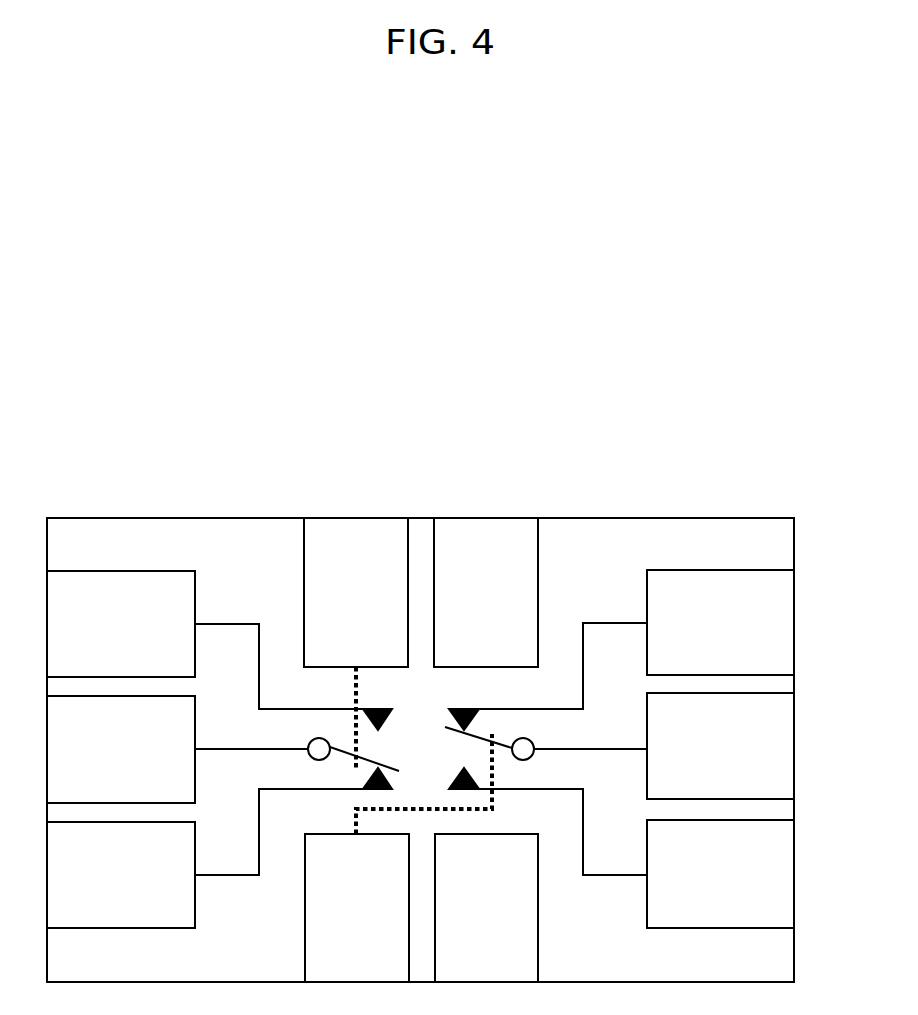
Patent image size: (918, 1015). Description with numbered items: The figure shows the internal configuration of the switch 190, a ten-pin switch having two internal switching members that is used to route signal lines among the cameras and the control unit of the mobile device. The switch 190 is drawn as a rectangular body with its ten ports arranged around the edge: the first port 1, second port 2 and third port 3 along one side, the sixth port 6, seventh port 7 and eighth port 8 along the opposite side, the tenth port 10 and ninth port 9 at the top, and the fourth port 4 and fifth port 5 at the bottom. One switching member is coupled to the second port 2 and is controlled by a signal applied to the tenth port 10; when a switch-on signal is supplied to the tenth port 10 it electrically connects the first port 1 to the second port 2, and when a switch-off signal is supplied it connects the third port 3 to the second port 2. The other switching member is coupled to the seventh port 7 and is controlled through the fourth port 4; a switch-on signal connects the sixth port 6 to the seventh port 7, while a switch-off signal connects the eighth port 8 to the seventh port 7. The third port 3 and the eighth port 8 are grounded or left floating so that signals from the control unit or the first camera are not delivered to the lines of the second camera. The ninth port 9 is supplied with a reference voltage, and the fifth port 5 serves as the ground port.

The switch 190 is at (746, 388).
The first port 1 is at (121, 624).
The second port 2 is at (121, 749).
The third port 3 is at (121, 875).
The fourth port 4 is at (357, 908).
The fifth port 5 is at (486, 908).
The sixth port 6 is at (720, 874).
The seventh port 7 is at (720, 746).
The eighth port 8 is at (720, 622).
The ninth port 9 is at (486, 592).
The tenth port 10 is at (356, 592).